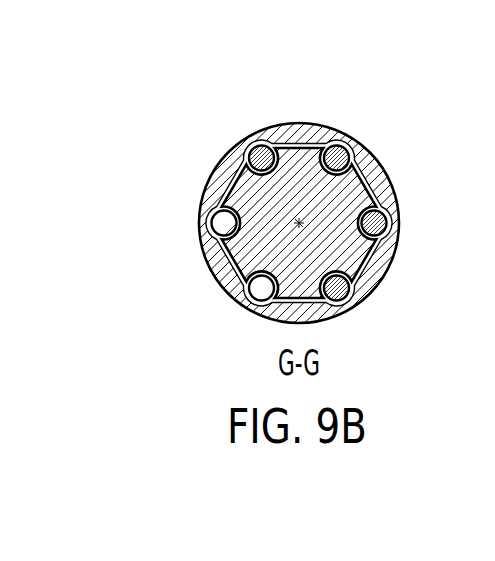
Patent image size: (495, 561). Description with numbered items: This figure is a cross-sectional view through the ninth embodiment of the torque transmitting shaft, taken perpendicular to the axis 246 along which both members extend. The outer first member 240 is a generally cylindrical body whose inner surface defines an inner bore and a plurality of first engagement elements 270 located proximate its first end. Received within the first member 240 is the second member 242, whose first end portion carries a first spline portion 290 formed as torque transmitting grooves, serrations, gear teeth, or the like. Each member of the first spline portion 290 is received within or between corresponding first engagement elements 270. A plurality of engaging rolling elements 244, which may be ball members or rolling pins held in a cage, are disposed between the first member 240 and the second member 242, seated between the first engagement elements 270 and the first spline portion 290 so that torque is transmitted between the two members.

The first member 240 is at (311, 131).
The first engagement elements 270 is at (361, 149).
The second member 242 is at (349, 196).
The engaging rolling elements 244 is at (383, 224).
The axis 246 is at (292, 243).
The first spline portion 290 is at (353, 251).